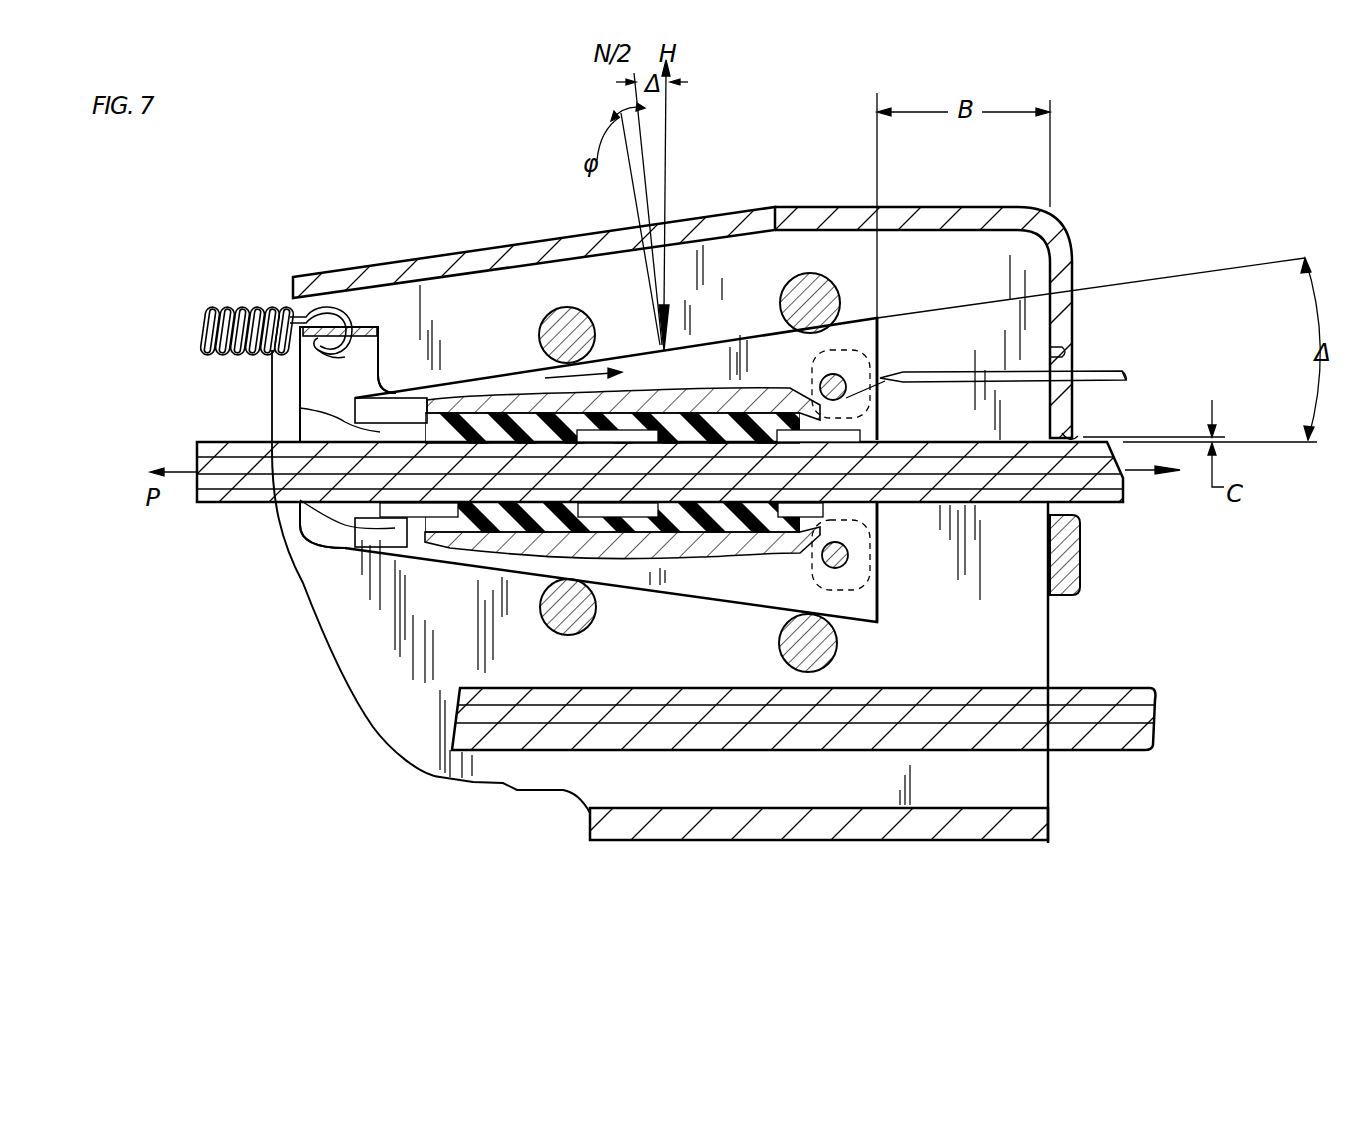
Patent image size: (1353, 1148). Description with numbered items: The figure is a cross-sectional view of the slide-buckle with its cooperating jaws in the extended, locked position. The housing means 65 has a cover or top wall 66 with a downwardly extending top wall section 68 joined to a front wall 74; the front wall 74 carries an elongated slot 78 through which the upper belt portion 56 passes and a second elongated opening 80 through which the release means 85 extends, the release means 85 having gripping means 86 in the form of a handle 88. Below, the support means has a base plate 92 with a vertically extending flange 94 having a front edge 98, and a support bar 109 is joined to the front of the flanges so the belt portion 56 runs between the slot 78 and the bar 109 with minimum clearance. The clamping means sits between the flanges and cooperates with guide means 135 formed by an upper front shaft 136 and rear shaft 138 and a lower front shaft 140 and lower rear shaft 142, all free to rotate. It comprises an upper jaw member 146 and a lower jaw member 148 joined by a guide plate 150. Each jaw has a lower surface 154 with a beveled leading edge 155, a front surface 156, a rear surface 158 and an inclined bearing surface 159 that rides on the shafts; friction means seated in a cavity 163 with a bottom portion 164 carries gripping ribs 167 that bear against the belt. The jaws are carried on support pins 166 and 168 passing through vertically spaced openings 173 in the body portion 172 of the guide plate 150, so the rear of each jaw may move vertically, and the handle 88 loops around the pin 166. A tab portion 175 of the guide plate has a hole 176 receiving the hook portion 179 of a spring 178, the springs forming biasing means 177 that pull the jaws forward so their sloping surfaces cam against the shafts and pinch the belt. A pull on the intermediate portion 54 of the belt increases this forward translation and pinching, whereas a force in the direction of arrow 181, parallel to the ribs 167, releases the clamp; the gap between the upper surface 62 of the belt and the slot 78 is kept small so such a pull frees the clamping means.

The intermediate portion of the belt 54 is at (1123, 690).
The upper belt portion 56 is at (1090, 506).
The upper surface of the upper belt portion 62 is at (953, 440).
The housing means 65 is at (723, 305).
The cover or top wall 66 is at (962, 207).
The downwardly extending top wall section 68 is at (372, 276).
The front wall 74 is at (1080, 306).
The elongated opening or slot 78 is at (1080, 437).
The second elongated opening 80 is at (1068, 355).
The release means 85 is at (276, 293).
The gripping means 86 is at (1130, 367).
The handle 88 is at (968, 372).
The base plate 92 is at (822, 843).
The flange 94 is at (372, 732).
The front edge 98 is at (1052, 836).
The support member or bar 109 is at (1085, 566).
The guide means 135 is at (834, 282).
The front shaft 136 is at (789, 280).
The rear shaft 138 is at (592, 321).
The lower front shaft 140 is at (780, 656).
The lower rear shaft 142 is at (582, 632).
The upper jaw member 146 is at (487, 390).
The lower jaw member 148 is at (412, 551).
The guide plate 150 is at (300, 386).
The lower face or surface 154 is at (880, 438).
The beveled leading edge 155 is at (360, 437).
The front surface 156 is at (880, 333).
The rear surface 158 is at (347, 546).
The upper or bearing surface 159 is at (448, 386).
The cavity or seat 163 is at (763, 533).
The bottom portion 164 is at (622, 532).
The support pin 166 is at (856, 378).
The gripping ribs 167 is at (455, 474).
The support pin 168 is at (850, 557).
The body portion 172 is at (394, 392).
The openings or slots 173 is at (814, 353).
The tab portion 175 is at (378, 333).
The hole 176 is at (358, 319).
The biasing means 177 is at (262, 316).
The spring 178 is at (210, 310).
The hook portion 179 is at (345, 358).
The arrow indicating release force 181 is at (1140, 472).